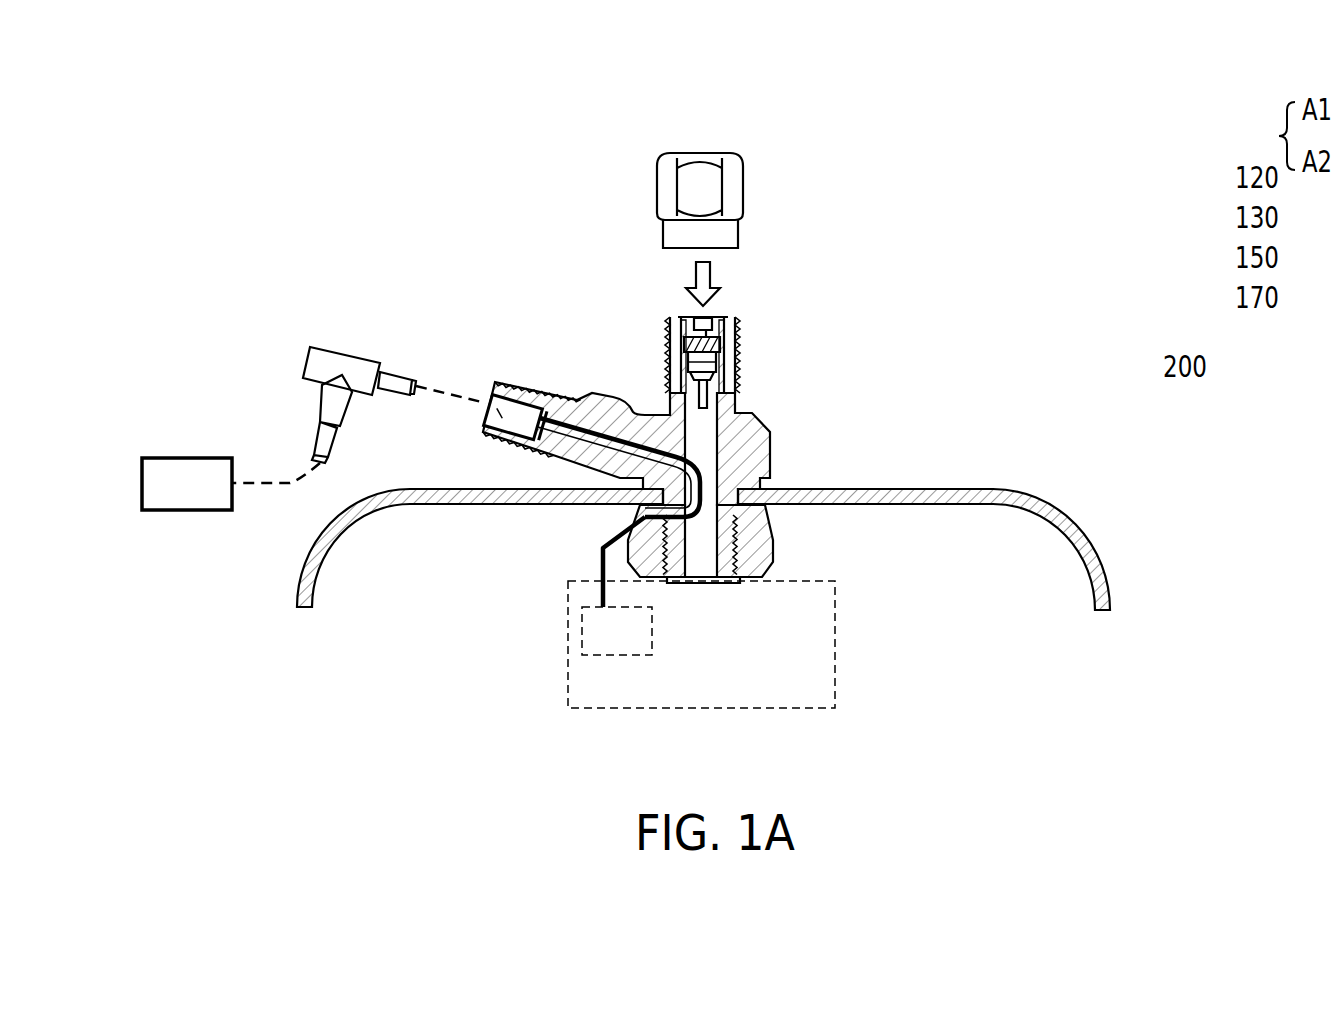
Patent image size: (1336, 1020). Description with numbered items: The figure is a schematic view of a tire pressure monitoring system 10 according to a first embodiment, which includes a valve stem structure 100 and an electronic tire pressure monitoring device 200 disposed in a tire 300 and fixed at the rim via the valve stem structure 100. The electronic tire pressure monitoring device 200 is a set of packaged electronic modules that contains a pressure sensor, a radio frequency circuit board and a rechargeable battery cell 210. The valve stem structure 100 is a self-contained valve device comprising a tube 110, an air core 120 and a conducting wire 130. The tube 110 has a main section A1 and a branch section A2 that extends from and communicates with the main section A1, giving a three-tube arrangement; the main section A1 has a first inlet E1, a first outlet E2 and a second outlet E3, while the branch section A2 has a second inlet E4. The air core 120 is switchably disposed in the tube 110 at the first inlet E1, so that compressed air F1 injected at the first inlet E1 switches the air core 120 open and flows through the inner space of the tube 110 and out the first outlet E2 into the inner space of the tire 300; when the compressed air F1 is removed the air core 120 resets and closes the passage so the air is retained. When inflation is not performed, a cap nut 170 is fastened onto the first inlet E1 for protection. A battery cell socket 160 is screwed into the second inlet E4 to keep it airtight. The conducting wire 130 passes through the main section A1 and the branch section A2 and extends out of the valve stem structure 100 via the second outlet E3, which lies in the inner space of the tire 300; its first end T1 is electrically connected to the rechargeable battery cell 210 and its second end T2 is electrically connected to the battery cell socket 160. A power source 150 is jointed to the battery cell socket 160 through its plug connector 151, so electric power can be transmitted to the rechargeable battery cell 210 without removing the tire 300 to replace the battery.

The tire pressure monitoring system 10 is at (1157, 207).
The valve stem structure 100 is at (1228, 127).
The tube 110 is at (881, 351).
The air core 120 is at (734, 365).
The conducting wire 130 is at (596, 424).
The power source 150 is at (187, 484).
The plug connector 151 is at (310, 356).
The battery cell socket 160 is at (505, 420).
The cap nut 170 is at (655, 185).
The electronic tire pressure monitoring device 200 is at (708, 644).
The rechargeable battery cell 210 is at (582, 632).
The tire 300 is at (1085, 545).
The main section A1 is at (769, 428).
The branch section A2 is at (605, 394).
The first inlet E1 is at (706, 318).
The first outlet E2 is at (709, 588).
The second outlet E3 is at (648, 517).
The second inlet E4 is at (490, 400).
The compressed air F1 is at (690, 274).
The first end T1 is at (606, 556).
The second end T2 is at (574, 440).